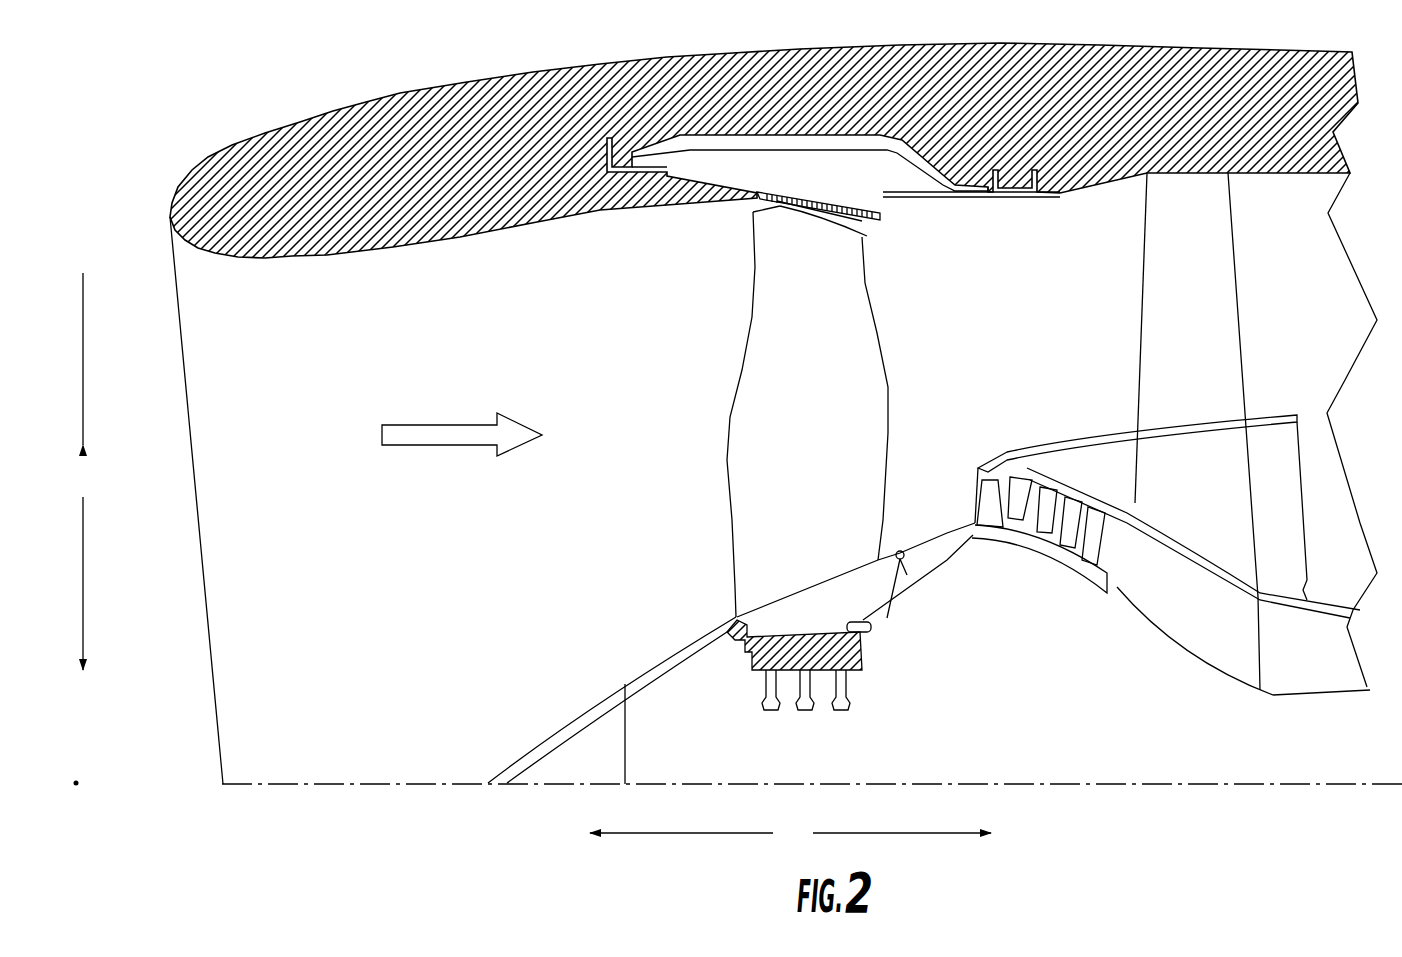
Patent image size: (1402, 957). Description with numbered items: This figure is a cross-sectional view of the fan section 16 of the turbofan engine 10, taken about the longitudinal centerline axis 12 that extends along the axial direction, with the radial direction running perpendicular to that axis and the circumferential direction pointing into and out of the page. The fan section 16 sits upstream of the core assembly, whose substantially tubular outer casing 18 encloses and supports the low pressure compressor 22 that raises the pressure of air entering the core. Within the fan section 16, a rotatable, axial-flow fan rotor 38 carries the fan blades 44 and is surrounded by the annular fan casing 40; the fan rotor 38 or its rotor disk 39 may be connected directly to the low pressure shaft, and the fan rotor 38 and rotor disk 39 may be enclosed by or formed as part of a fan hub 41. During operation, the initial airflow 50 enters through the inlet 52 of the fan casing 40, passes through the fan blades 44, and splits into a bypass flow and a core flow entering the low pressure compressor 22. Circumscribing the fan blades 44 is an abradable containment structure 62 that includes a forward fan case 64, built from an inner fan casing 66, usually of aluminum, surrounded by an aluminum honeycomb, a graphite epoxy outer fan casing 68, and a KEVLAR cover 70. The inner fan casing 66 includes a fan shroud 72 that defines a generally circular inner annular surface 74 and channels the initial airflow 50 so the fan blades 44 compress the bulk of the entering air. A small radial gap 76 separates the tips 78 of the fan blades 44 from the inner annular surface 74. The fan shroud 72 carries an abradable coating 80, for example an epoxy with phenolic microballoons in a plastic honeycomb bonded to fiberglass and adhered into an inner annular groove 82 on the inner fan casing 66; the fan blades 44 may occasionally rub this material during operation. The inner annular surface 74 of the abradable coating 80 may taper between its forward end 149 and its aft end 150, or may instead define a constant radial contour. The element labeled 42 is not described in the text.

The turbofan engine 10 is at (247, 107).
The centerline axis 12 is at (667, 784).
The fan section 16 is at (707, 345).
The outer casing 18 is at (1171, 534).
The low pressure compressor 22 is at (1028, 549).
The fan rotor 38 is at (845, 645).
The rotor disk 39 is at (767, 702).
The fan casing 40 is at (778, 75).
The fan hub 41 is at (552, 727).
The fan exit guide vane 42 is at (1235, 312).
The fan blades 44 is at (843, 411).
The initial airflow 50 is at (417, 447).
The inlet 52 is at (180, 350).
The abradable containment structure 62 is at (843, 153).
The forward fan case 64 is at (963, 146).
The inner fan casing 66 is at (944, 200).
The outer fan casing 68 is at (872, 146).
The cover 70 is at (807, 147).
The fan shroud 72 is at (869, 239).
The inner annular surface 74 is at (777, 203).
The radial gap 76 is at (860, 221).
The tips 78 is at (781, 208).
The abradable coating 80 is at (818, 185).
The inner annular groove 82 is at (812, 186).
The forward end 149 is at (740, 203).
The aft end 150 is at (860, 185).